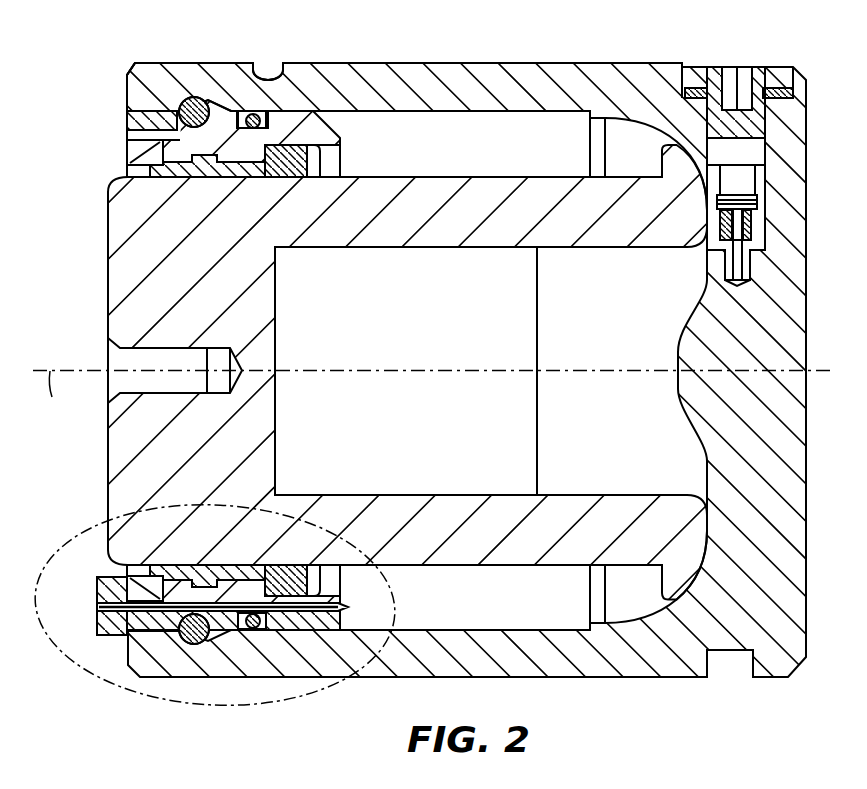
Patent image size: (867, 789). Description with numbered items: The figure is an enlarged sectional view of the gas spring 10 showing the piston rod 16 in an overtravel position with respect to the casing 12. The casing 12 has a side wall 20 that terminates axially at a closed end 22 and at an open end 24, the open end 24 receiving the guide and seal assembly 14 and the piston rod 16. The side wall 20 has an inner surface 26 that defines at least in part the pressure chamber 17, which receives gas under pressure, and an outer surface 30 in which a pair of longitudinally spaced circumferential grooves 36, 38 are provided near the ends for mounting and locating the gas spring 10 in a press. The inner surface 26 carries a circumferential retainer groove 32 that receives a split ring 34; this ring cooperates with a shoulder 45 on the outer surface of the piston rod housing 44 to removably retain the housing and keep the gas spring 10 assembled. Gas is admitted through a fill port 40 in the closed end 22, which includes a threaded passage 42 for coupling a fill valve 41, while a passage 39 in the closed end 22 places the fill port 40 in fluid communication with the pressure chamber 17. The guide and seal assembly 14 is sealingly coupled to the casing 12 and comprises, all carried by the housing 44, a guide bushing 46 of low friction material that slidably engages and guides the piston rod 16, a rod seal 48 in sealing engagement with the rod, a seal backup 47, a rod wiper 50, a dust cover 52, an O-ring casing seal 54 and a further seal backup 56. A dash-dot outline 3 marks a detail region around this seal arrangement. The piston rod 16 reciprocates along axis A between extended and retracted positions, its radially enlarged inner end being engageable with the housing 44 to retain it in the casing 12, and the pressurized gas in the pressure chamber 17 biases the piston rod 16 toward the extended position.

The gas spring 10 is at (80, 106).
The casing 12 is at (577, 692).
The guide and seal assembly 14 is at (115, 132).
The piston rod 16 is at (90, 287).
The pressure chamber 17 is at (486, 158).
The side wall 20 is at (628, 80).
The closed end 22 is at (793, 323).
The open end 24 is at (132, 80).
The inner surface 26 is at (428, 118).
The outer surface 30 is at (528, 63).
The retainer groove 32 is at (201, 99).
The split ring 34 is at (190, 640).
The circumferential groove 36 is at (262, 78).
The circumferential groove 38 is at (734, 652).
The passage 39 is at (750, 267).
The fill port 40 is at (748, 153).
The fill valve 41 is at (760, 229).
The threaded passage 42 is at (744, 201).
The piston rod housing 44 is at (311, 100).
The shoulder 45 is at (187, 101).
The guide bushing 46 is at (186, 182).
The seal backup 47 is at (274, 140).
The rod seal 48 is at (285, 190).
The rod wiper 50 is at (114, 173).
The dust cover 52 is at (118, 100).
The O-ring casing seal 54 is at (266, 628).
The seal backup 56 is at (243, 626).
The detail region (FIG. 3) 3 is at (118, 696).